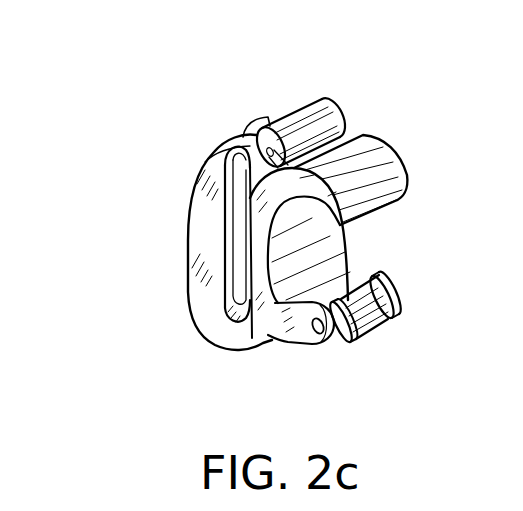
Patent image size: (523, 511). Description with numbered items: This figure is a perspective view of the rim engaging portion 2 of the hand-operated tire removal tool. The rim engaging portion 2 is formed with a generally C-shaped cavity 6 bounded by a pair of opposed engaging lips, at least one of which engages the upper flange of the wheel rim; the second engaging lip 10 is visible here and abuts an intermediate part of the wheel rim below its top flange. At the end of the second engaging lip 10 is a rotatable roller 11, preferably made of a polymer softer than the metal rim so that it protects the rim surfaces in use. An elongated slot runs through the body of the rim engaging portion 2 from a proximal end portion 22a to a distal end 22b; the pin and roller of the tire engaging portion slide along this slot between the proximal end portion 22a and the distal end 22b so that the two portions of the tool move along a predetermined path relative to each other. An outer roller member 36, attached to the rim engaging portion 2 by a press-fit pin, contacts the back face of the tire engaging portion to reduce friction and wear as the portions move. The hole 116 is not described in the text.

The rim engaging portion 2 is at (154, 224).
The C-shaped cavity 6 is at (298, 285).
The second engaging lip 10 is at (394, 266).
The rotatable roller 11 is at (374, 326).
The proximal end portion of slot 22a is at (224, 322).
The distal end of slot 22b is at (236, 152).
The outer roller member 36 is at (303, 102).
The hole 116 is at (316, 337).